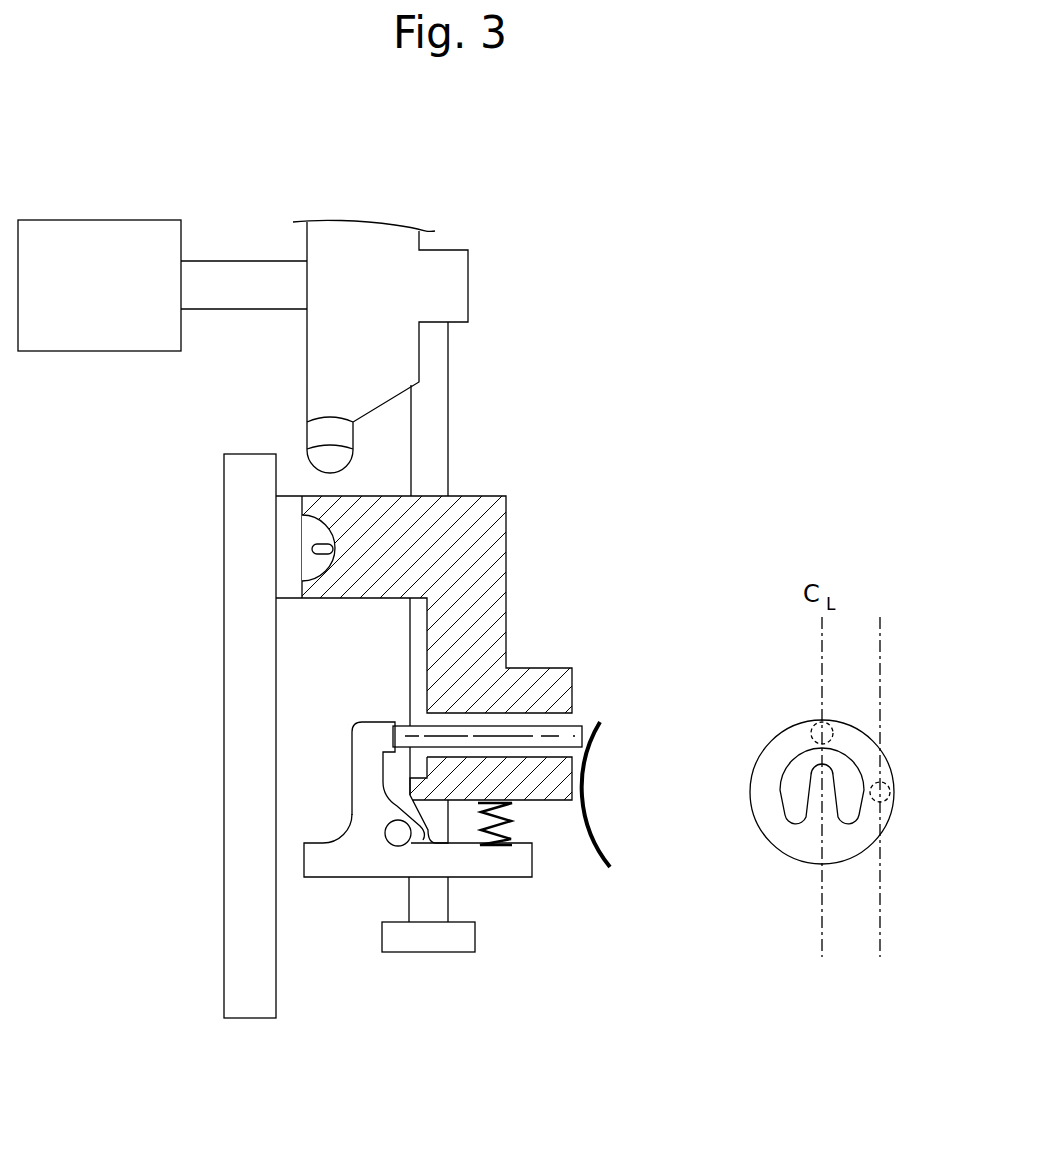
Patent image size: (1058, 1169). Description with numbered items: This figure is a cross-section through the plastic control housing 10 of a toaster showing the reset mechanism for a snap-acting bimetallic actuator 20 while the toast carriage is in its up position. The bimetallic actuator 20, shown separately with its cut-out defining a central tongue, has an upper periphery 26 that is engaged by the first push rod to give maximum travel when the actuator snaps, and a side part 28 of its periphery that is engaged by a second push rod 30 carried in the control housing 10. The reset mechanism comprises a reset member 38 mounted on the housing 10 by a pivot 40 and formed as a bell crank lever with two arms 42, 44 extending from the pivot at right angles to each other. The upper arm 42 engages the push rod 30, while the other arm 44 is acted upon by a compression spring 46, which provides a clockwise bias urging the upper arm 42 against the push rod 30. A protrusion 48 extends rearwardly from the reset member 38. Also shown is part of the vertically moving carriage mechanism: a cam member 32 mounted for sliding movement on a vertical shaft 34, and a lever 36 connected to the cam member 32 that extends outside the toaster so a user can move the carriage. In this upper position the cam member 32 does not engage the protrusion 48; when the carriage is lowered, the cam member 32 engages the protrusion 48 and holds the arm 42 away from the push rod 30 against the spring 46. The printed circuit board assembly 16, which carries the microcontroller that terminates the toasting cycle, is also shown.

The control housing 10 is at (462, 530).
The printed circuit board assembly 16 is at (240, 560).
The bimetallic actuator 20 is at (597, 843).
The upper periphery 26 is at (805, 718).
The side part of the periphery 28 is at (890, 783).
The second push rod 30 is at (540, 733).
The cam member 32 is at (333, 357).
The vertical shaft 34 is at (435, 395).
The lever 36 is at (97, 242).
The reset member 38 is at (341, 915).
The pivot 40 is at (387, 833).
The upper arm 42 is at (367, 763).
The other arm 44 is at (505, 865).
The compression spring 46 is at (507, 817).
The protrusion 48 is at (315, 857).